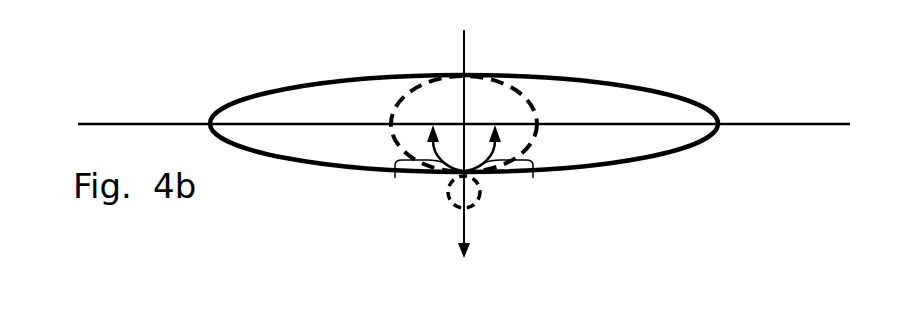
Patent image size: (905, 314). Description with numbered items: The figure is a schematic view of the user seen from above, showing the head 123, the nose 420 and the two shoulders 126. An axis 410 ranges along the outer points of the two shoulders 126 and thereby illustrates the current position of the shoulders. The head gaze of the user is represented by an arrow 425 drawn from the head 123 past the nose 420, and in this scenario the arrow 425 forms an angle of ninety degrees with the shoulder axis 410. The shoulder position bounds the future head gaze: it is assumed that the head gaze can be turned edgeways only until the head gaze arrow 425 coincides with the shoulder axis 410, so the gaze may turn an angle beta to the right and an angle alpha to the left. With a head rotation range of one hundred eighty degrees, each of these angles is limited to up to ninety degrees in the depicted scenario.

The shoulders 126 is at (245, 103).
The head 123 is at (400, 100).
The axis 410 is at (137, 124).
The nose 420 is at (452, 200).
The arrow 425 is at (467, 228).